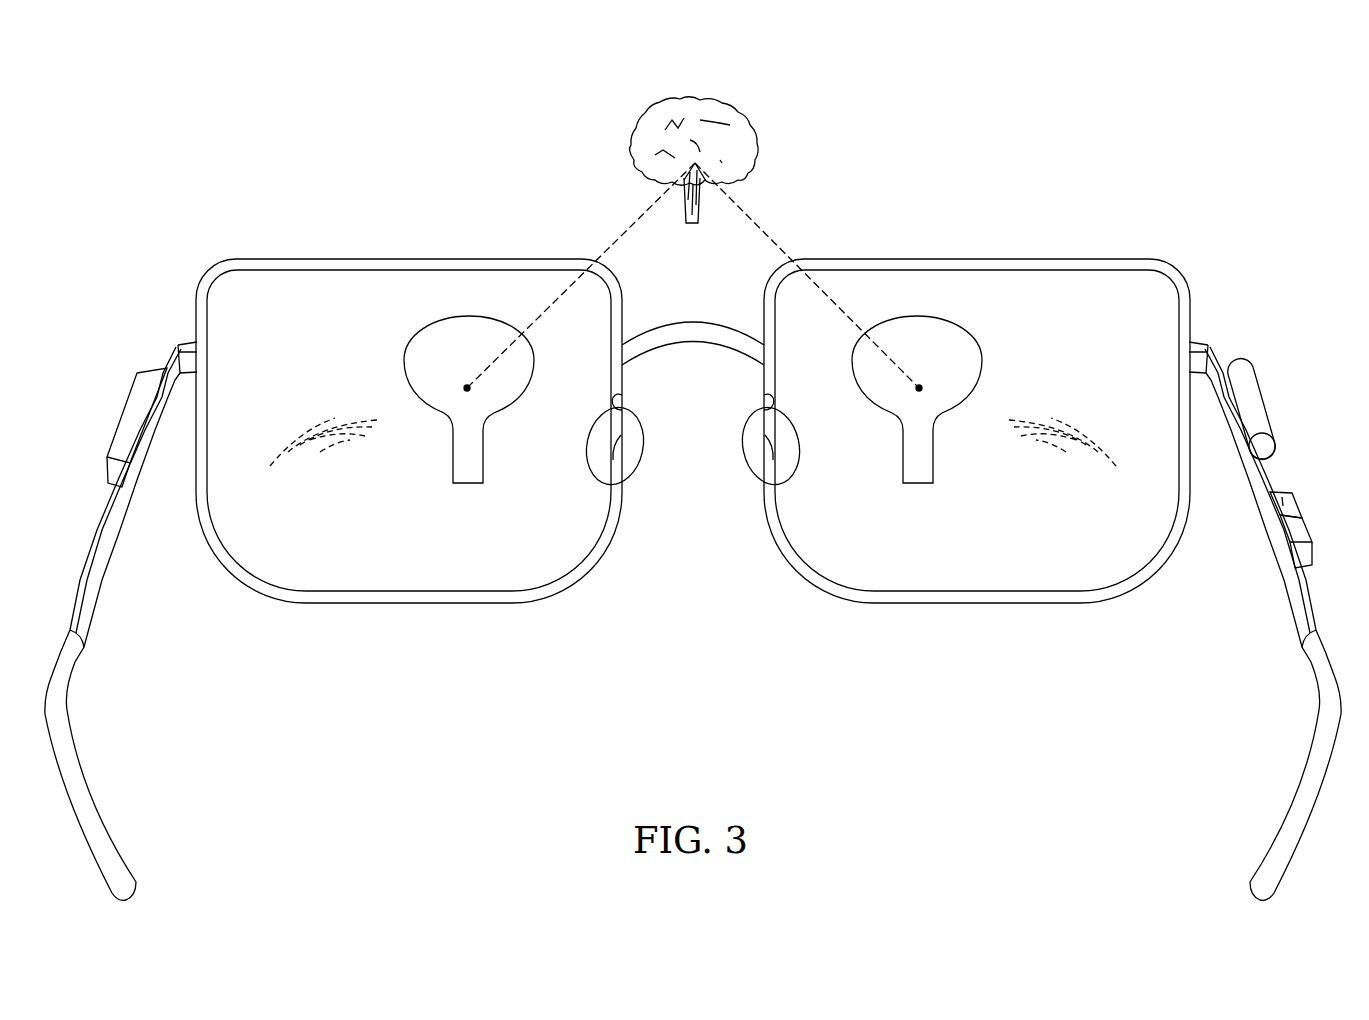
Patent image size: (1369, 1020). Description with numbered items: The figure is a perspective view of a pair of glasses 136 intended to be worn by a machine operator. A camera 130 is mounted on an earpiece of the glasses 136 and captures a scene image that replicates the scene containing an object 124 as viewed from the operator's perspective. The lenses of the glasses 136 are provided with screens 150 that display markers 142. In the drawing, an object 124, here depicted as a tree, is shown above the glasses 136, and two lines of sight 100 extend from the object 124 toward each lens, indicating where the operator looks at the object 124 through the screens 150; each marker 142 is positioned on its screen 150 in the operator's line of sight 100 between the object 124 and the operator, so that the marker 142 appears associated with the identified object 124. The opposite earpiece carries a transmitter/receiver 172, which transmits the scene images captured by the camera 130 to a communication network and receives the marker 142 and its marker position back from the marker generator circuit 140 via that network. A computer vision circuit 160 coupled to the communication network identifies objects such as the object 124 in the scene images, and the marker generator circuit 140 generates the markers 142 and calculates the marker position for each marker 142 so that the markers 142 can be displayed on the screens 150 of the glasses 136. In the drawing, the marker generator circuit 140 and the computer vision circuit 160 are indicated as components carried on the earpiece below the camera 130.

The lines of sight 100 is at (627, 232).
The object 124 is at (697, 98).
The camera 130 is at (1250, 408).
The pair of glasses 136 is at (703, 519).
The marker generator circuit 140 is at (1287, 490).
The marker 142 is at (405, 360).
The screen 150 is at (434, 536).
The computer vision circuit 160 is at (1293, 530).
The transmitter/receiver 172 is at (130, 418).